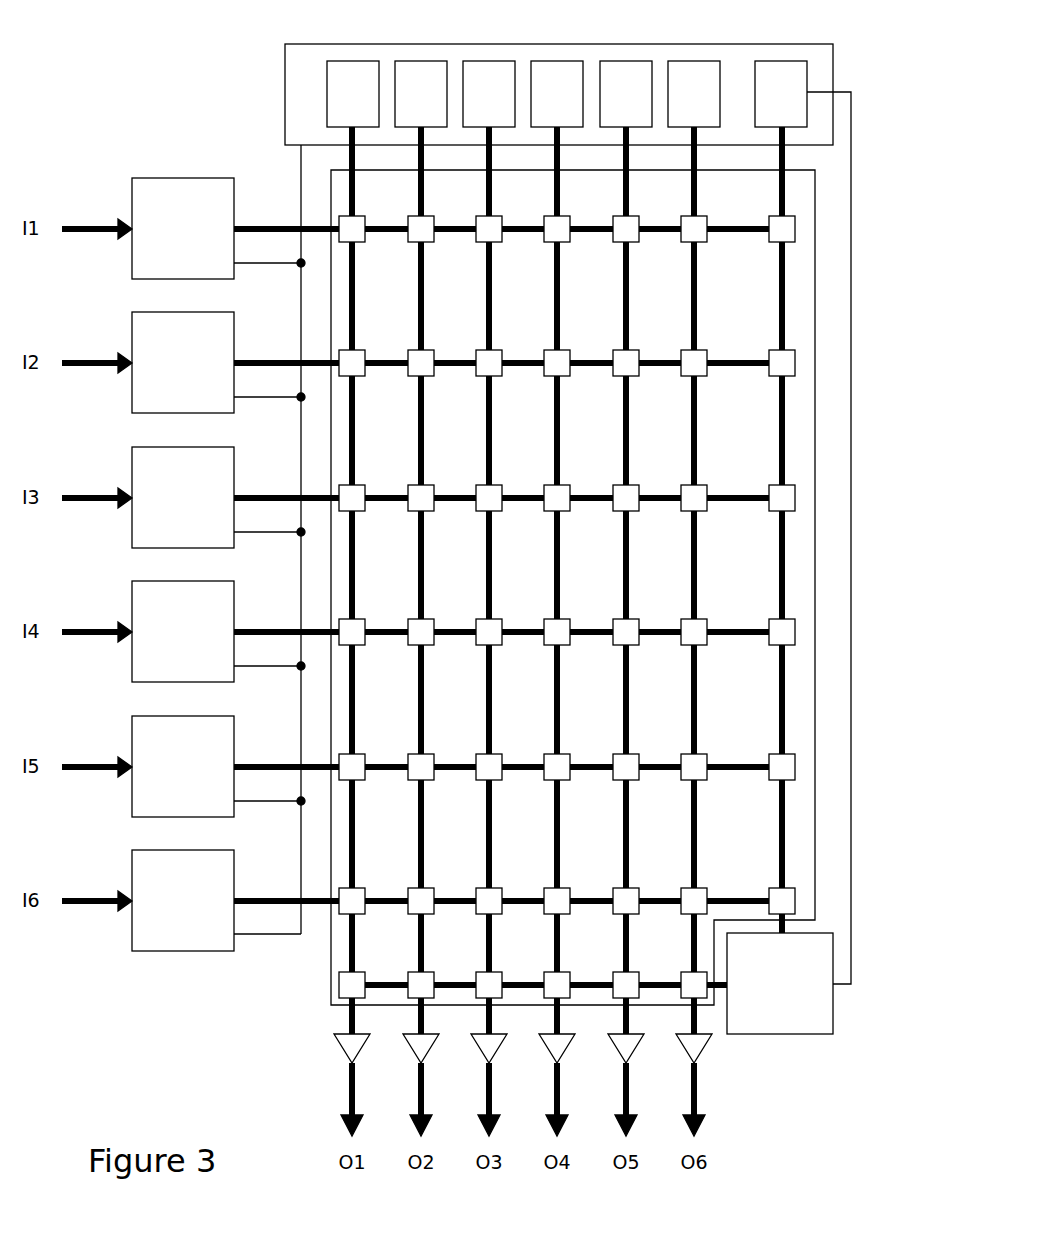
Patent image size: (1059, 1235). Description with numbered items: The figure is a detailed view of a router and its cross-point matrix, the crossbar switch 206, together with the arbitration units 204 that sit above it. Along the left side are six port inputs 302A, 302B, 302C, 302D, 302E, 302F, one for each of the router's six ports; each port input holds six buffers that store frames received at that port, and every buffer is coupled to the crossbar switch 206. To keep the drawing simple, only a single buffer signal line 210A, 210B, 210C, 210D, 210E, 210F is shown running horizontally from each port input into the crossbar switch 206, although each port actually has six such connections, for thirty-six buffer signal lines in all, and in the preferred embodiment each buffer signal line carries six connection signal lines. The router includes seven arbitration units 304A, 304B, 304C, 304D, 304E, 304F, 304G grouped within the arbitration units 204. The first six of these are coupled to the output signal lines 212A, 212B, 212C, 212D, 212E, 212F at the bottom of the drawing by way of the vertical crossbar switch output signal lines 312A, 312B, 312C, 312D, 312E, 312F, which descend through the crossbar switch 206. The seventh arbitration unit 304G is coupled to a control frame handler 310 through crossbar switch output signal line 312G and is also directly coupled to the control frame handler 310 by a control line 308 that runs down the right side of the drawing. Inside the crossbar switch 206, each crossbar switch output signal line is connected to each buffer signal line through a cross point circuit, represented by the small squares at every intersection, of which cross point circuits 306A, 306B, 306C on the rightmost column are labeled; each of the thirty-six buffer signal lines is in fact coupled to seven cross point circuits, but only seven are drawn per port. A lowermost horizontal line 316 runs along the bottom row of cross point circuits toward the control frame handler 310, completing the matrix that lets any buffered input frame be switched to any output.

The arbitration units 204 is at (285, 88).
The crossbar switch 206 is at (331, 960).
The buffer signal line 210A is at (284, 229).
The buffer signal line 210B is at (284, 363).
The buffer signal line 210C is at (284, 498).
The buffer signal line 210D is at (284, 632).
The buffer signal line 210E is at (284, 767).
The buffer signal line 210F is at (284, 901).
The output signal line 212A is at (349, 1104).
The output signal line 212B is at (418, 1104).
The output signal line 212C is at (486, 1104).
The output signal line 212D is at (554, 1104).
The output signal line 212E is at (623, 1104).
The output signal line 212F is at (691, 1104).
The port 1 input 302A is at (200, 178).
The port input 302B is at (200, 312).
The port input 302C is at (200, 447).
The port input 302D is at (200, 581).
The port input 302E is at (200, 716).
The port input 302F is at (200, 850).
The arbitration unit 304A is at (340, 61).
The arbitration unit 304B is at (408, 61).
The arbitration unit 304C is at (476, 61).
The arbitration unit 304D is at (545, 61).
The arbitration unit 304E is at (614, 61).
The arbitration unit 304F is at (682, 61).
The seventh arbitration unit 304G is at (770, 61).
The cross point circuit 306A is at (795, 233).
The cross point circuit 306B is at (795, 368).
The cross point circuit 306C is at (795, 496).
The control line 308 is at (851, 305).
The control frame handler 310 is at (745, 1034).
The crossbar switch output signal line 312A is at (356, 316).
The crossbar switch output signal line 312B is at (425, 316).
The crossbar switch output signal line 312C is at (493, 316).
The crossbar switch output signal line 312D is at (561, 316).
The crossbar switch output signal line 312E is at (630, 316).
The crossbar switch output signal line 312F is at (698, 316).
The crossbar switch output signal line 312G is at (778, 340).
The control bus row 316 is at (385, 992).